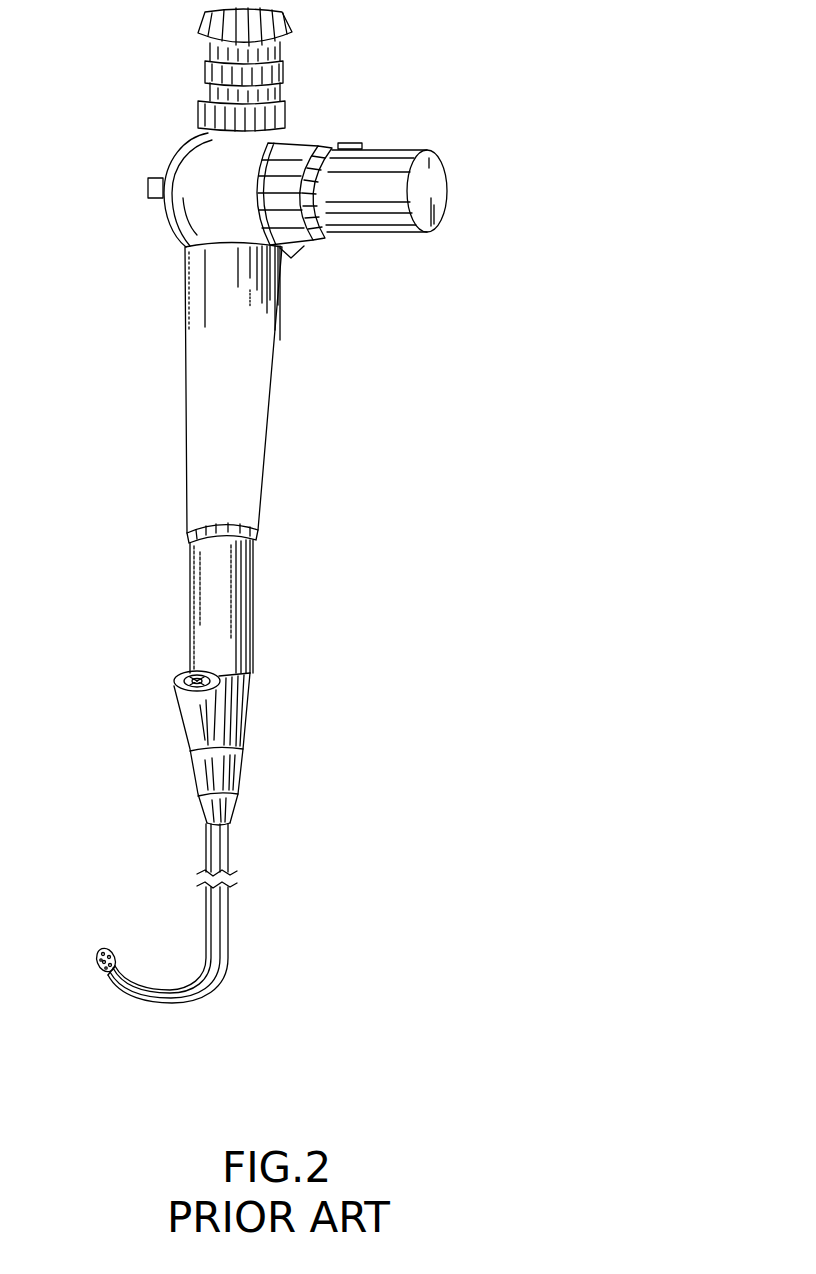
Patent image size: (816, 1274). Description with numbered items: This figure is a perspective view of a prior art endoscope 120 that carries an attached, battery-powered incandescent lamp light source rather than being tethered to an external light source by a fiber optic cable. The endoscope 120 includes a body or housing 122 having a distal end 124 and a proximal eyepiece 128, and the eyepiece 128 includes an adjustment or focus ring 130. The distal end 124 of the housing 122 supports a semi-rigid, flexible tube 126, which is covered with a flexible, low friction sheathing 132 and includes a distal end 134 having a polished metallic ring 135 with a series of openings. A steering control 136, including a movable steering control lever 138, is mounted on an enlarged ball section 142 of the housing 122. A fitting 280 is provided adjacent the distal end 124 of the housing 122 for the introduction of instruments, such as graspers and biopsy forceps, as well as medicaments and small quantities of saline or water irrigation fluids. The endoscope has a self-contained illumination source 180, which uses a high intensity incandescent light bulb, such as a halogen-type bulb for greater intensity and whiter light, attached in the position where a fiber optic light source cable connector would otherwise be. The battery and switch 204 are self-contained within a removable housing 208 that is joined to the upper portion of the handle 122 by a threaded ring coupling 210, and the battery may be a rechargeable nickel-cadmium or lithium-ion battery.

The prior art endoscope 120 is at (298, 408).
The body or housing 122 is at (179, 440).
The distal end 124 is at (263, 598).
The semi-rigid, flexible tube 126 is at (236, 848).
The proximal eyepiece 128 is at (290, 86).
The adjustment or focus ring 130 is at (290, 58).
The flexible, low friction sheathing 132 is at (229, 922).
The distal end 134 is at (113, 950).
The polished metallic ring 135 is at (111, 977).
The steering control 136 is at (157, 207).
The movable steering control lever 138 is at (148, 186).
The enlarged ball section 142 is at (285, 135).
The self-contained illumination source 180 is at (331, 245).
The battery and switch 204 is at (358, 144).
The removable housing 208 is at (405, 229).
The threaded ring coupling 210 is at (300, 249).
The fitting 280 is at (172, 701).